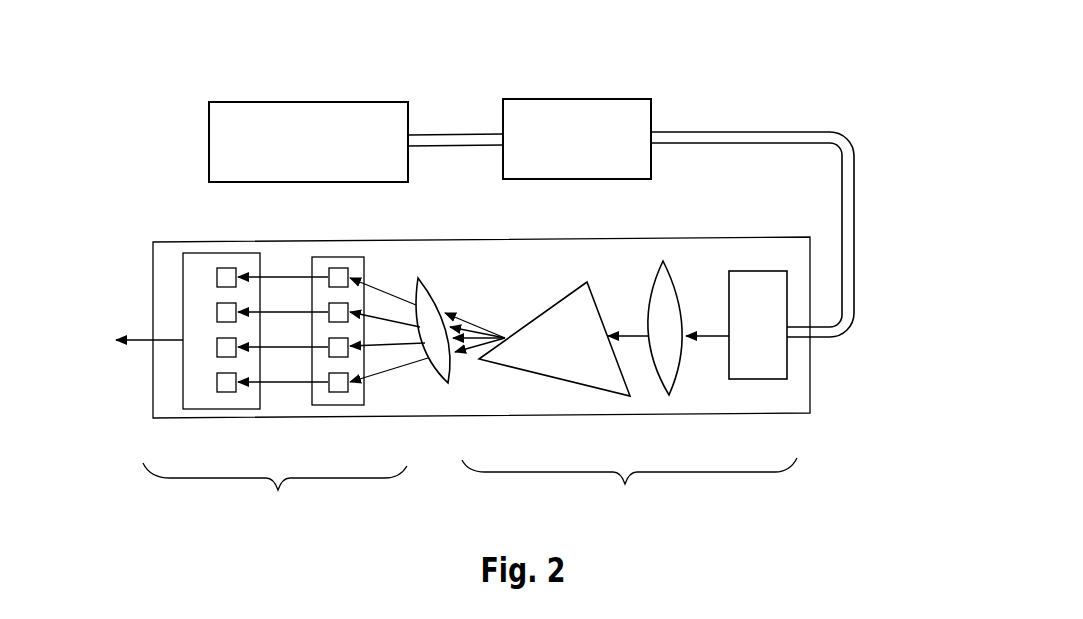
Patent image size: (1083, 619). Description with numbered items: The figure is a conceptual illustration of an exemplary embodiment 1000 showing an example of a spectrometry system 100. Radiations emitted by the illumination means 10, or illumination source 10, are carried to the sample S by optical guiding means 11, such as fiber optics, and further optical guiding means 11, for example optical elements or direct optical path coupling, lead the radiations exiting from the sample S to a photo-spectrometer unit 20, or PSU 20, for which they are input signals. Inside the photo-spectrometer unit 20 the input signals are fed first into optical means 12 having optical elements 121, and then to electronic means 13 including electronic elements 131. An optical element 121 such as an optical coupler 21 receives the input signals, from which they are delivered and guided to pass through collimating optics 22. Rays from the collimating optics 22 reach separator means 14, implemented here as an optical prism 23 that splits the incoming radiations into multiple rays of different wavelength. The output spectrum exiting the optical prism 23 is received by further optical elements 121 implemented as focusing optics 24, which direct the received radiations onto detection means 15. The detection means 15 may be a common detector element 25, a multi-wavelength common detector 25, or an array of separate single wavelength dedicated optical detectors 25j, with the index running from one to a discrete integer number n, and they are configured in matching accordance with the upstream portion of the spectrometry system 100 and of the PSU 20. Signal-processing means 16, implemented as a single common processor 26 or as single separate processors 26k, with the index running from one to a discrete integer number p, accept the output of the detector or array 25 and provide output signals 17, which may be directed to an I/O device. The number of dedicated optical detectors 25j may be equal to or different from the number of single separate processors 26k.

The illumination means 10 is at (298, 101).
The sample S is at (563, 99).
The optical guiding means 11 is at (456, 135).
The embodiment 1000 is at (795, 80).
The spectrometry system 100 is at (810, 102).
The photo-spectrometer unit 20 is at (717, 239).
The optical coupler 21 is at (757, 380).
The collimating optics 22 is at (669, 396).
The optical prism 23 is at (568, 376).
The separator means 14 is at (598, 385).
The focusing optics 24 is at (448, 381).
The optical means 12 is at (606, 395).
The optical elements 121 is at (606, 395).
The detector element 25 is at (357, 336).
The single wavelength dedicated optical detectors 25j is at (337, 266).
The detection means 15 is at (315, 407).
The common processor 26 is at (235, 335).
The single separate processors 26k is at (226, 267).
The signal-processing means 16 is at (197, 410).
The electronic means 13 is at (285, 359).
The electronic elements 131 is at (285, 359).
The output signals 17 is at (142, 339).